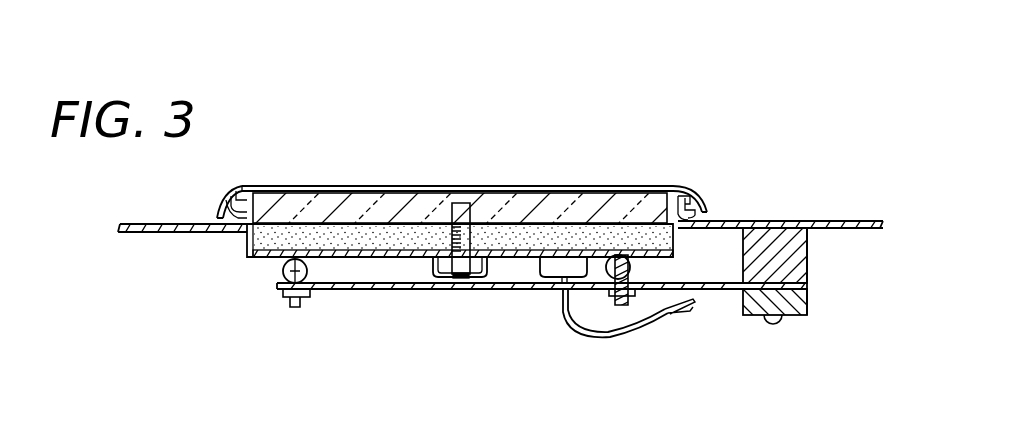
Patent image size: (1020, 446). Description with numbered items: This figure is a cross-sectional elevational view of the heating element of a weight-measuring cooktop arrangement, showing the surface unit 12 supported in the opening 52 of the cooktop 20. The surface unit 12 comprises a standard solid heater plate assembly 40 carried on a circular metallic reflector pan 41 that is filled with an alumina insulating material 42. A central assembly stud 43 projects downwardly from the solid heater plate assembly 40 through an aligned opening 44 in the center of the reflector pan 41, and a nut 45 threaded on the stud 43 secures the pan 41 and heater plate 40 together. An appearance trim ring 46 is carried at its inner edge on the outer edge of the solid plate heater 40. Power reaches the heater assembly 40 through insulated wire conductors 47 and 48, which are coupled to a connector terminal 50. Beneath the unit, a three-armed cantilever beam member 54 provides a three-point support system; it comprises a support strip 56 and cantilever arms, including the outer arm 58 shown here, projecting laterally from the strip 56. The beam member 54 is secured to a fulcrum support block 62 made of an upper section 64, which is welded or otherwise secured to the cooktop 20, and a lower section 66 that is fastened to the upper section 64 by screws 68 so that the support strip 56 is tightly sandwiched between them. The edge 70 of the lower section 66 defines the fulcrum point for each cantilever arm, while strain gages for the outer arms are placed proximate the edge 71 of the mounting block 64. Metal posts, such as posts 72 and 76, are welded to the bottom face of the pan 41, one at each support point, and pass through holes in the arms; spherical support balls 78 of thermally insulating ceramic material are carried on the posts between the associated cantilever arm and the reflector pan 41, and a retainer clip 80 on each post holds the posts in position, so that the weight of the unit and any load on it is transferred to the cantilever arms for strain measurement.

The surface unit 12 is at (692, 170).
The cooktop 20 is at (750, 221).
The solid heater plate assembly 40 is at (565, 186).
The reflector pan 41 is at (247, 236).
The alumina insulating material 42 is at (330, 230).
The central assembly stud 43 is at (490, 200).
The aligned opening 44 is at (460, 204).
The nut 45 is at (433, 265).
The appearance trim ring 46 is at (222, 205).
The insulated wire conductor 47 is at (670, 315).
The insulated wire conductor 48 is at (695, 302).
The connector terminal 50 is at (548, 262).
The opening 52 is at (672, 190).
The three-armed cantilever beam member 54 is at (686, 280).
The support strip 56 is at (808, 286).
The outer cantilever arm 58 is at (428, 290).
The fulcrum support block 62 is at (834, 265).
The upper section 64 is at (808, 255).
The lower section 66 is at (808, 305).
The screw 68 is at (780, 320).
The edge of lower section 70 is at (741, 293).
The edge of mounting block 71 is at (743, 281).
The metal post 72 is at (290, 302).
The metal post 76 is at (612, 290).
The spherical support ball 78 is at (283, 273).
The retainer clip 80 is at (310, 295).